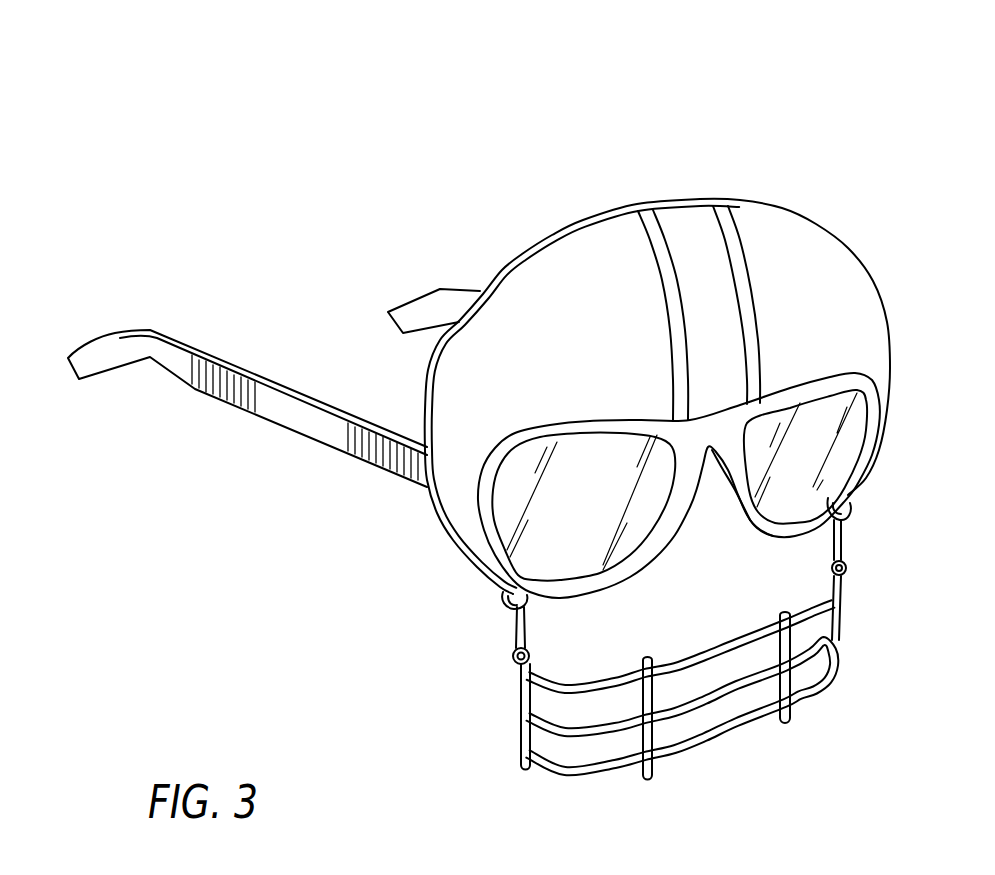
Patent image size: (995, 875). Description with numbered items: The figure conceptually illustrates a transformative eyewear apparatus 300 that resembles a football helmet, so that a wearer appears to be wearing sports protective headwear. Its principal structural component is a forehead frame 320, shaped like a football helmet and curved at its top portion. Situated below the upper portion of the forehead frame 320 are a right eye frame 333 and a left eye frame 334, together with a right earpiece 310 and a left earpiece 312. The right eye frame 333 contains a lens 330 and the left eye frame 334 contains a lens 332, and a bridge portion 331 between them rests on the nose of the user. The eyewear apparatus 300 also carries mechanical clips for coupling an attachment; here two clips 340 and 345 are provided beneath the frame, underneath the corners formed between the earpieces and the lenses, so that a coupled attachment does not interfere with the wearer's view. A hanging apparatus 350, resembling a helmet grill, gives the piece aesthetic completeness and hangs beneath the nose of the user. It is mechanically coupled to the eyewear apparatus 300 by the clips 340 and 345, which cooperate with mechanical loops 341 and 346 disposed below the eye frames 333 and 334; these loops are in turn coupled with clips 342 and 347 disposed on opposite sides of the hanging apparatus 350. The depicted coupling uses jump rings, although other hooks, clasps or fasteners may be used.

The eyewear apparatus 300 is at (477, 131).
The right earpiece 310 is at (253, 393).
The left earpiece 312 is at (442, 287).
The forehead frame 320 is at (833, 277).
The lens 330 is at (580, 547).
The bridge portion 331 is at (708, 447).
The lens 332 is at (795, 495).
The right eye frame 333 is at (632, 568).
The left eye frame 334 is at (765, 530).
The clip 340 is at (503, 600).
The mechanical loop 341 is at (517, 620).
The clip 342 is at (515, 657).
The clip 345 is at (848, 508).
The mechanical loop 346 is at (838, 538).
The clip 347 is at (847, 567).
The hanging apparatus 350 is at (723, 735).